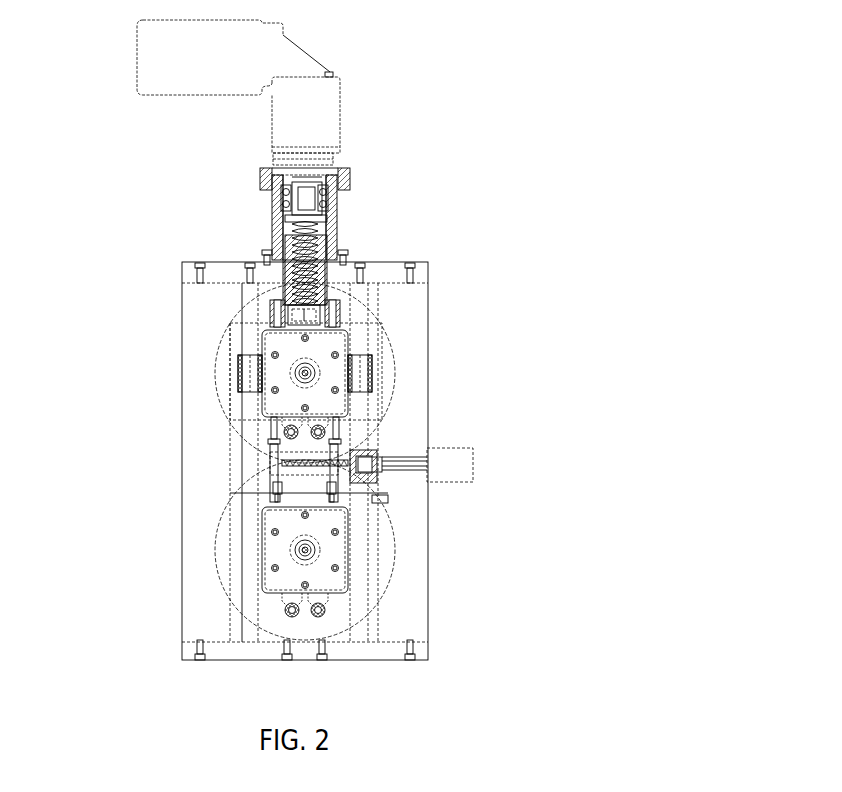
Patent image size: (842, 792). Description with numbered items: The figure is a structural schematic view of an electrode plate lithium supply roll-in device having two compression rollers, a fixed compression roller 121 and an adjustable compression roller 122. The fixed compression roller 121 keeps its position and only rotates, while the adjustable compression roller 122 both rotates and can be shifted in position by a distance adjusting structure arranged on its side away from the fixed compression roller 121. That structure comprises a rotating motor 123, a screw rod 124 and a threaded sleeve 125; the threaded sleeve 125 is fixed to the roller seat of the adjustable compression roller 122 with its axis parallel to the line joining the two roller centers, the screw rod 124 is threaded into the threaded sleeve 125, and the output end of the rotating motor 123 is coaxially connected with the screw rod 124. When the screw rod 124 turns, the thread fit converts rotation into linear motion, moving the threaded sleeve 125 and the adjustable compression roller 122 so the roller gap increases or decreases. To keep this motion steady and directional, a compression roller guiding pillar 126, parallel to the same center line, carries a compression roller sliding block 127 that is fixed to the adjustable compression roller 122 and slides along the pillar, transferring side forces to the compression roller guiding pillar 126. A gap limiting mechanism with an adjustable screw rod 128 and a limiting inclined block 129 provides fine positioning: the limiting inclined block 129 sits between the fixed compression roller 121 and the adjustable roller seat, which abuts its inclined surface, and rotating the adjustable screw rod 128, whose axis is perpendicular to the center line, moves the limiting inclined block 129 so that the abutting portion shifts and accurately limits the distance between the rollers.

The fixed compression roller 121 is at (385, 557).
The adjustable compression roller 122 is at (387, 397).
The rotating motor 123 is at (306, 127).
The screw rod 124 is at (335, 232).
The threaded sleeve 125 is at (330, 252).
The compression roller guiding pillar 126 is at (360, 333).
The compression roller sliding block 127 is at (373, 389).
The adjustable screw rod 128 is at (367, 485).
The limiting inclined block 129 is at (288, 468).